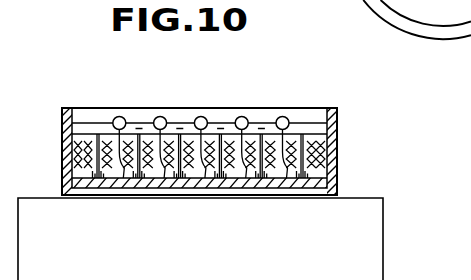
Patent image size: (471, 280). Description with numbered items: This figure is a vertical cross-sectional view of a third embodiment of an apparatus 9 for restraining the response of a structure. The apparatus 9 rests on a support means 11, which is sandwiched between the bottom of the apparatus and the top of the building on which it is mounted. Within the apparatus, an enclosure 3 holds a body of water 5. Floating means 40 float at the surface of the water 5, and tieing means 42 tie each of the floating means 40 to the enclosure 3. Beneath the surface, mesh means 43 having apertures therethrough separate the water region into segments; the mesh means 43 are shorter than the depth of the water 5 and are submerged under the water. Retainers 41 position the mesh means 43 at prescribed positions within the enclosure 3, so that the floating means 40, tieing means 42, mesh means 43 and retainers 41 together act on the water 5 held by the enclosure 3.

The apparatus 9 is at (360, 121).
The enclosure 3 is at (339, 150).
The mesh means 43 is at (314, 133).
The water 5 is at (93, 123).
The floating means 40 is at (165, 117).
The tieing means 42 is at (158, 178).
The retainers 41 is at (108, 178).
The support means 11 is at (330, 194).